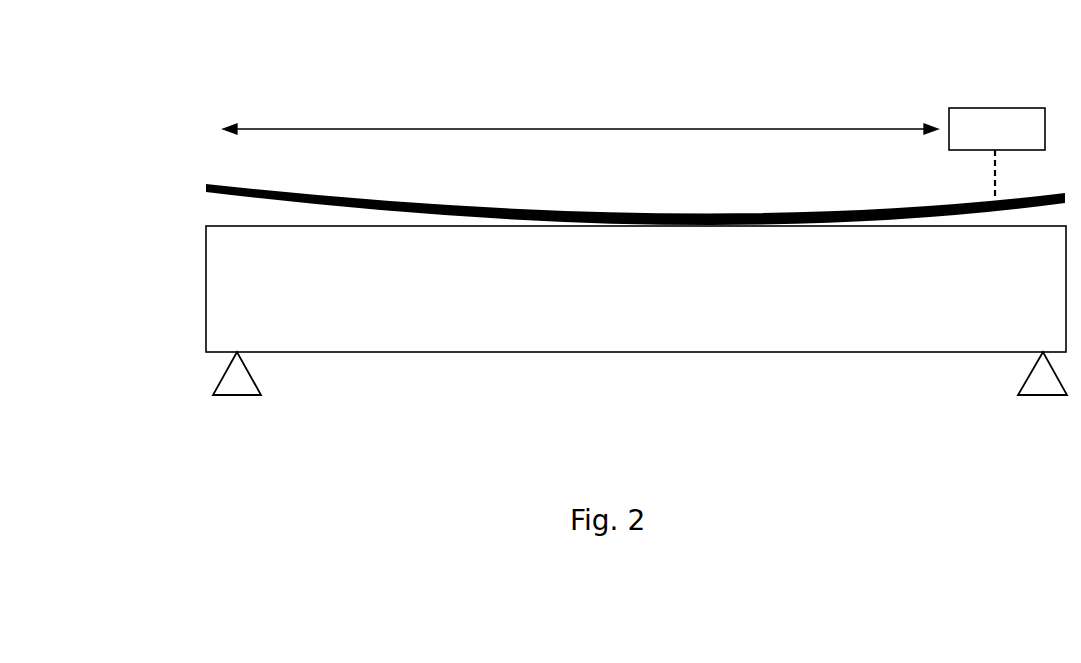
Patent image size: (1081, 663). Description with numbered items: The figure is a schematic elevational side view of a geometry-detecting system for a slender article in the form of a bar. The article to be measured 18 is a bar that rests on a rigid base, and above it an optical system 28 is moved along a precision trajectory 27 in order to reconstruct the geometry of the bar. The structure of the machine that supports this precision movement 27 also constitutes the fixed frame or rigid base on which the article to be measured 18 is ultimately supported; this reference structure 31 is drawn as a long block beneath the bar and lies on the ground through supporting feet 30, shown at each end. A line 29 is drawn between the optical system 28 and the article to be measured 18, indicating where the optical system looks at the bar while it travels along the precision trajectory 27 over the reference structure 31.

The article to be measured 18 is at (200, 166).
The precision trajectory 27 is at (555, 110).
The optical system 28 is at (990, 90).
The measuring beam 29 is at (965, 172).
The supporting feet 30 is at (203, 388).
The reference structure 31 is at (609, 295).